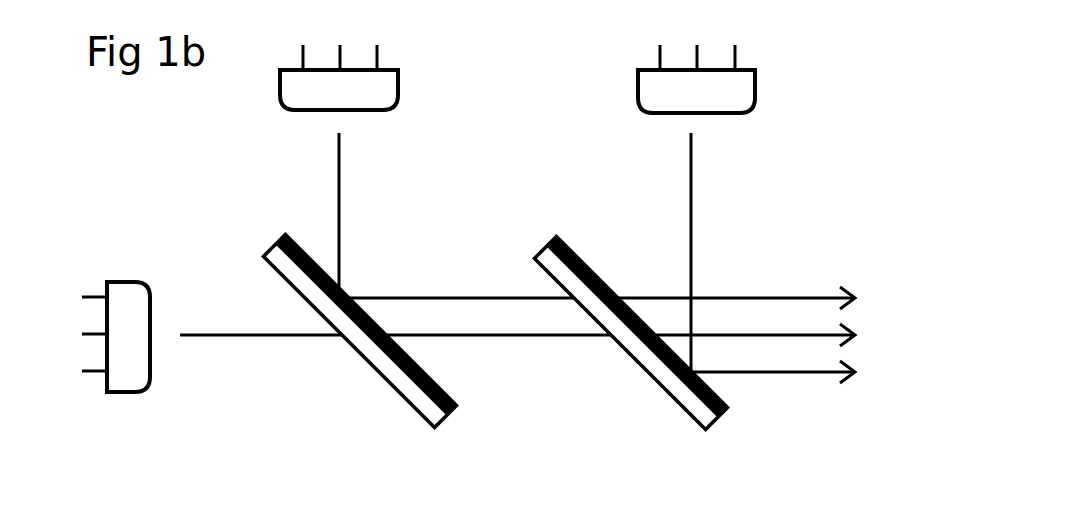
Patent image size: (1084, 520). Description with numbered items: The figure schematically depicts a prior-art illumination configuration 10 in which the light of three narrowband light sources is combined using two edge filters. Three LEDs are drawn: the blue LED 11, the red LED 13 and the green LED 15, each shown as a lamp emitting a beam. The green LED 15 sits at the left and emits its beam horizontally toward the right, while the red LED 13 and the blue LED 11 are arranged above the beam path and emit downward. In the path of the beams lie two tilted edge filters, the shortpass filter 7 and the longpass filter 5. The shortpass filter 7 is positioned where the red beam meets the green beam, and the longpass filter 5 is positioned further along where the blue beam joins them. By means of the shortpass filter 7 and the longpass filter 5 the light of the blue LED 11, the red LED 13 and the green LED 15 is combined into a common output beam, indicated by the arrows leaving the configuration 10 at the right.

The illumination configuration 10 is at (118, 158).
The blue LED 11 is at (755, 88).
The red LED 13 is at (398, 80).
The green LED 15 is at (122, 395).
The shortpass filter 7 is at (393, 387).
The longpass filter 5 is at (650, 377).